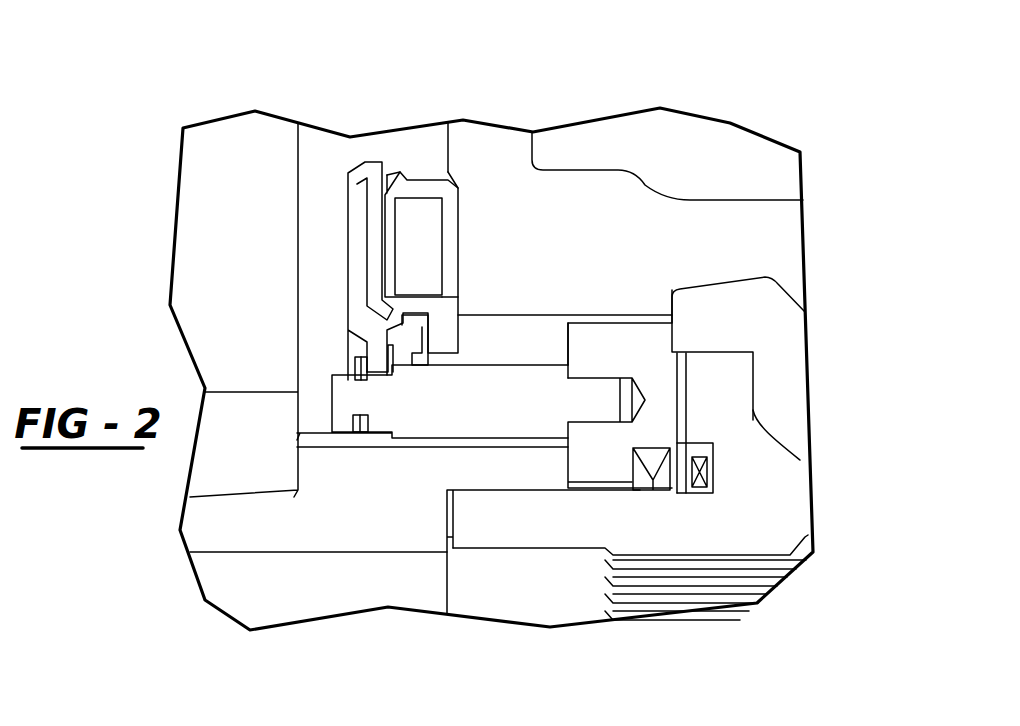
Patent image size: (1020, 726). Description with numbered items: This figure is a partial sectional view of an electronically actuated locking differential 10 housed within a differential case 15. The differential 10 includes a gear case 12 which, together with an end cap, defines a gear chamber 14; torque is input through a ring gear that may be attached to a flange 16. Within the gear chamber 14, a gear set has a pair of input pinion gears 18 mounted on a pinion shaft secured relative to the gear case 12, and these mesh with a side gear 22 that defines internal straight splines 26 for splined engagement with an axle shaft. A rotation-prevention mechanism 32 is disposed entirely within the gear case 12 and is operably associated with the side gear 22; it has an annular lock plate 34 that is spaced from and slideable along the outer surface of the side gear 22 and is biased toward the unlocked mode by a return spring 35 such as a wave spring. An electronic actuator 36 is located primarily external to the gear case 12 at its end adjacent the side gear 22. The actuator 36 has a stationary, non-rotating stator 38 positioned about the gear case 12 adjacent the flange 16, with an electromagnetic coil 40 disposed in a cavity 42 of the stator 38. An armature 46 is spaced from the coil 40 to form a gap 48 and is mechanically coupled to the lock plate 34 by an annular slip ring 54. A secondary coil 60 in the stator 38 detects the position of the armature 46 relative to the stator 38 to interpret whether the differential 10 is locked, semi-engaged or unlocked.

The electronically actuated locking differential 10 is at (836, 138).
The gear case 12 is at (773, 217).
The gear chamber 14 is at (792, 284).
The differential case 15 is at (242, 163).
The flange 16 is at (515, 150).
The input pinion gears 18 is at (790, 368).
The side gear 22 is at (753, 484).
The internal straight splines 26 is at (678, 580).
The rotation-prevention mechanism 32 is at (688, 328).
The lock plate 34 is at (657, 340).
The return spring 35 is at (668, 468).
The electronic actuator 36 is at (470, 191).
The stator 38 is at (443, 315).
The electromagnetic coil 40 is at (425, 237).
The cavity 42 is at (416, 195).
The armature 46 is at (355, 178).
The gap 48 is at (373, 275).
The annular slip ring 54 is at (445, 412).
The secondary coil 60 is at (388, 175).